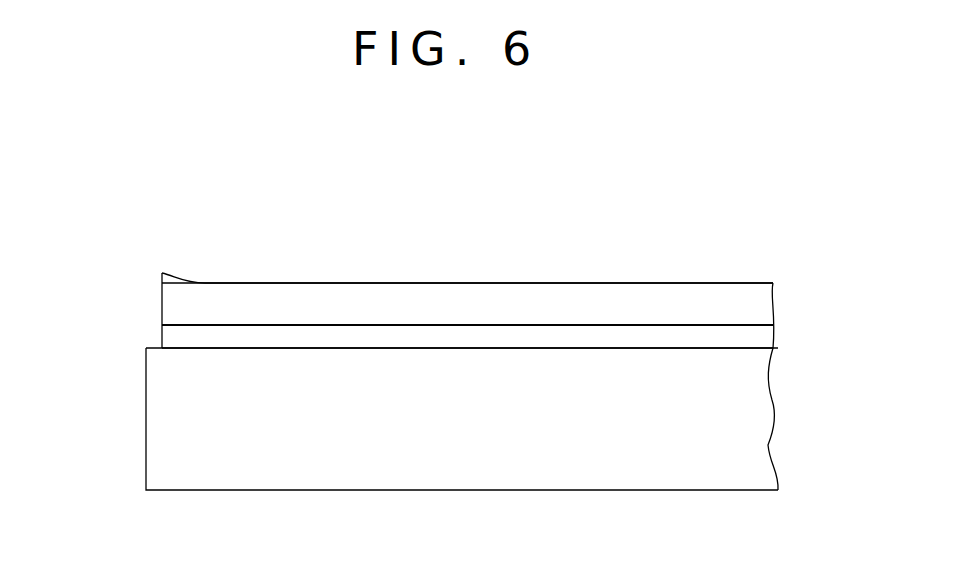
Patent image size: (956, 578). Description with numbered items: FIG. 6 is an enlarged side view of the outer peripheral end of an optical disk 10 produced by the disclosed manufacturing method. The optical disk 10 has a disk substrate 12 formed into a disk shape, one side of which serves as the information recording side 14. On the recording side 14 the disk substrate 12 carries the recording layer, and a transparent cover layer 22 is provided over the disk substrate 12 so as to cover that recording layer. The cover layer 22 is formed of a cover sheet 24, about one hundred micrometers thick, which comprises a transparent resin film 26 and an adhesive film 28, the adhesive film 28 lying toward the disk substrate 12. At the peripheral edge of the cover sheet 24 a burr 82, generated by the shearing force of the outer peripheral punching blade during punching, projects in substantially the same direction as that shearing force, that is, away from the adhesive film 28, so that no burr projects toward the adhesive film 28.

The optical disk 10 is at (750, 233).
The disk substrate 12 is at (146, 469).
The information recording side 14 is at (524, 348).
The cover layer 22 is at (775, 303).
The cover sheet 24 is at (83, 268).
The resin film 26 is at (180, 304).
The adhesive film 28 is at (180, 336).
The burr 82 is at (162, 273).